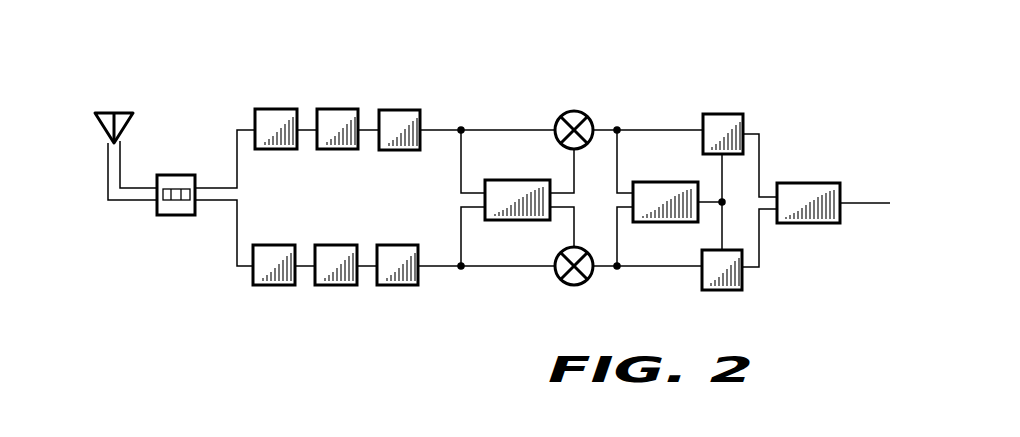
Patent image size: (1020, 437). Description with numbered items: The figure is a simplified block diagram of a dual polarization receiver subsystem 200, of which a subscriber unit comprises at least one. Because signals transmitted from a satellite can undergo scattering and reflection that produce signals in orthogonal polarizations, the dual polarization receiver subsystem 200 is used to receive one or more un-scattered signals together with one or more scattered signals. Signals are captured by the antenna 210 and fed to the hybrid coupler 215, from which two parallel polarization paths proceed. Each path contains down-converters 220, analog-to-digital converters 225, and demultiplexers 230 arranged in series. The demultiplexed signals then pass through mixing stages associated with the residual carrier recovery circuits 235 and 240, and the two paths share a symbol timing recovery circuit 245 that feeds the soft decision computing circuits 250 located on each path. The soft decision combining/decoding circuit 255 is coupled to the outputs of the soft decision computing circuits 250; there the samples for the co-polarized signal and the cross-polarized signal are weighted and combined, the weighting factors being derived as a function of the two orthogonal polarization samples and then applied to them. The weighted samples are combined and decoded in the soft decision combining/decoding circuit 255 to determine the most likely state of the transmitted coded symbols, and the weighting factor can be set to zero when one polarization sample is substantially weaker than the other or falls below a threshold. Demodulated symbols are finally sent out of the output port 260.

The dual polarization receiver subsystem 200 is at (835, 363).
The antenna 210 is at (121, 112).
The hybrid coupler 215 is at (181, 175).
The down-converters 220 is at (280, 109).
The analog-to-digital (A/D) converters 225 is at (342, 109).
The demultiplexers 230 is at (404, 110).
The residual carrier recovery circuit 235 is at (521, 180).
The residual carrier recovery circuits 240 is at (577, 111).
The symbol timing recovery circuit 245 is at (669, 182).
The soft decision computing circuits 250 is at (724, 114).
The soft decision combining/decoding circuit 255 is at (812, 183).
The output port 260 is at (875, 207).